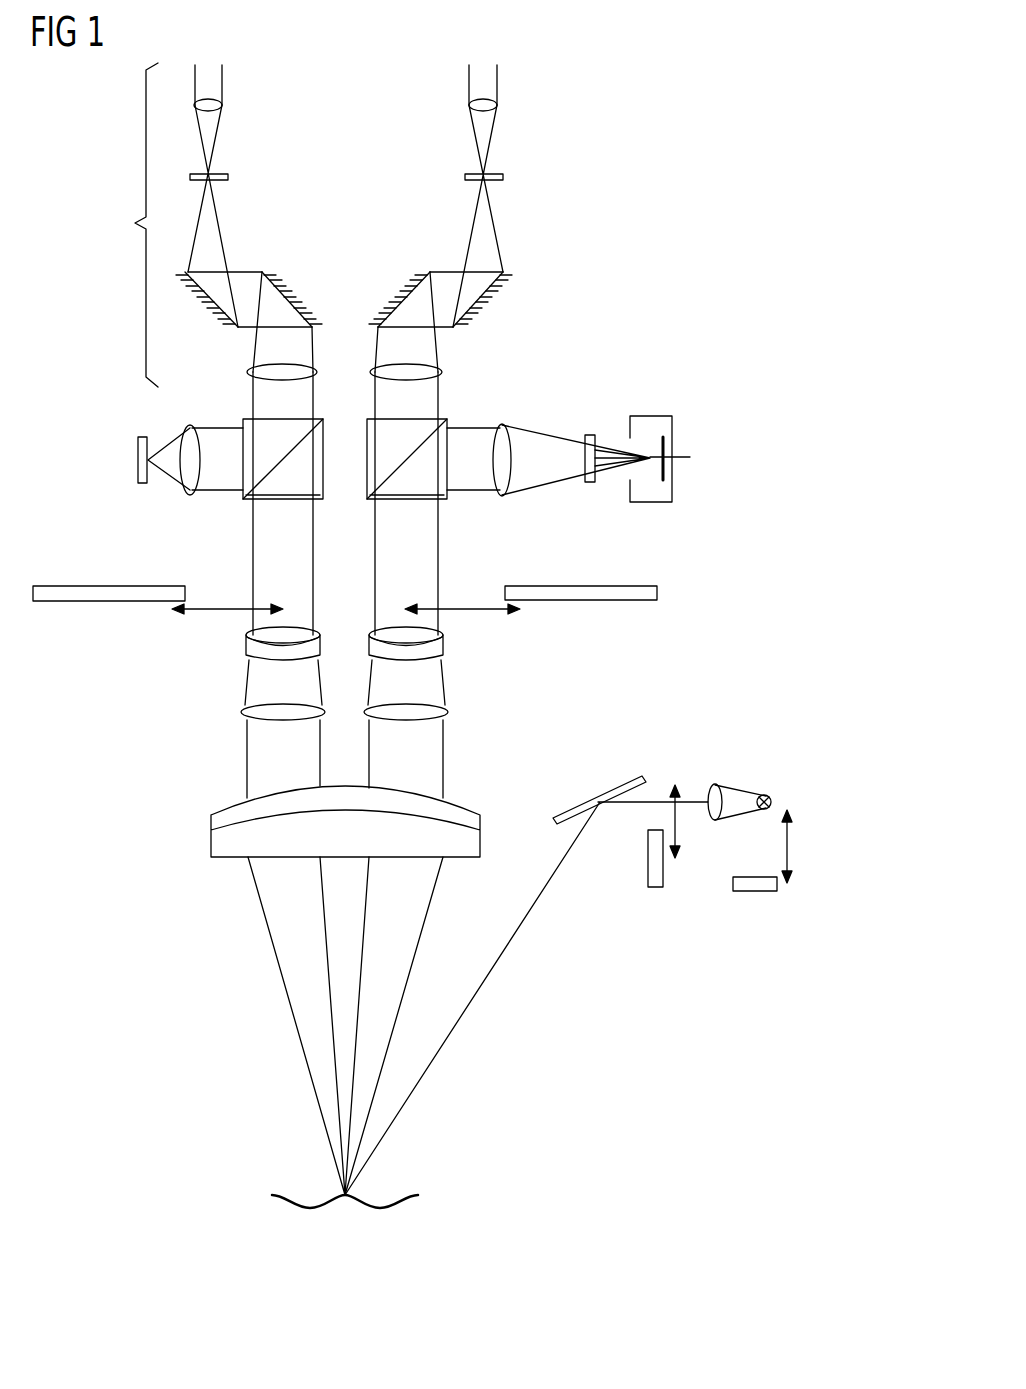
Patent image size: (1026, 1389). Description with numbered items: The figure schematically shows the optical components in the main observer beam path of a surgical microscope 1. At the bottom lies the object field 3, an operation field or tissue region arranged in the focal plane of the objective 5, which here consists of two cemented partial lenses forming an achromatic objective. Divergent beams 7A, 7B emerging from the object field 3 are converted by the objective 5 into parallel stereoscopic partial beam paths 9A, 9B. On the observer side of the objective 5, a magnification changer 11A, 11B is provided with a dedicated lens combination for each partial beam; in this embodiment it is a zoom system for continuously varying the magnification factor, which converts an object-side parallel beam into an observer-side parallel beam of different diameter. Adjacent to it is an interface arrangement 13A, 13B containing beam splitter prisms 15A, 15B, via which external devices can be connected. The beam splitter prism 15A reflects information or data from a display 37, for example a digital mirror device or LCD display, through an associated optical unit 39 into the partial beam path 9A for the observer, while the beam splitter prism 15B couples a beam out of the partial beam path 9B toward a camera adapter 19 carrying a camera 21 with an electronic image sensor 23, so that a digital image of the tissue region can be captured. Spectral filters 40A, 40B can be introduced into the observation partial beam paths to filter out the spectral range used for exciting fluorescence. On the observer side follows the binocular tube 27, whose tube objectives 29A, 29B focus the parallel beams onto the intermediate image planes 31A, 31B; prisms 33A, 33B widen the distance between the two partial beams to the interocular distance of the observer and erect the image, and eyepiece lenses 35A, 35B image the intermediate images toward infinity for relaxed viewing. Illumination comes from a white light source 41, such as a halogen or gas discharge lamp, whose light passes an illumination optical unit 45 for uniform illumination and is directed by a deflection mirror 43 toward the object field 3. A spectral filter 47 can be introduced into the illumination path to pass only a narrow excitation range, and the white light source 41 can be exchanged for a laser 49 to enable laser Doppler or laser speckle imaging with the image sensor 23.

The surgical microscope 1 is at (600, 280).
The object field 3 is at (360, 1193).
The objective 5 is at (190, 780).
The divergent beam 7A is at (280, 975).
The divergent beam 7B is at (428, 912).
The stereoscopic partial beam path 9A is at (246, 752).
The stereoscopic partial beam path 9B is at (446, 752).
The magnification changer 11A is at (213, 625).
The magnification changer 11B is at (470, 625).
The interface arrangement 13A is at (272, 501).
The interface arrangement 13B is at (422, 500).
The beam splitter prism 15A is at (325, 495).
The beam splitter prism 15B is at (366, 452).
The camera adapter 19 is at (598, 415).
The camera 21 is at (648, 416).
The image sensor 23 is at (668, 448).
The binocular tube 27 is at (130, 225).
The tube objective 29A is at (248, 372).
The tube objective 29B is at (442, 372).
The intermediate image plane 31A is at (230, 177).
The intermediate image plane 31B is at (503, 177).
The prism 33A is at (253, 260).
The prism 33B is at (437, 260).
The eyepiece lens 35A is at (222, 105).
The eyepiece lens 35B is at (497, 105).
The display 37 is at (138, 462).
The optical unit 39 is at (186, 427).
The spectral filter 40A is at (112, 586).
The spectral filter 40B is at (587, 586).
The white light source 41 is at (773, 798).
The deflection mirror 43 is at (612, 787).
The illumination optical unit 45 is at (750, 785).
The spectral filter 47 is at (648, 858).
The laser 49 is at (752, 893).